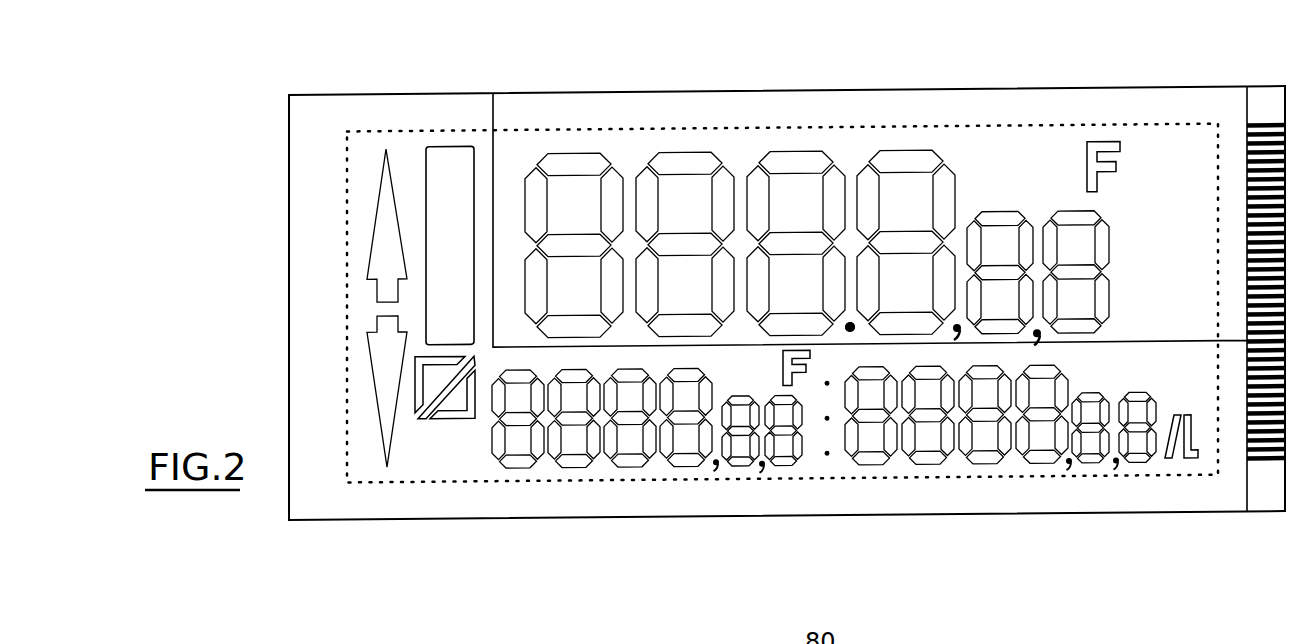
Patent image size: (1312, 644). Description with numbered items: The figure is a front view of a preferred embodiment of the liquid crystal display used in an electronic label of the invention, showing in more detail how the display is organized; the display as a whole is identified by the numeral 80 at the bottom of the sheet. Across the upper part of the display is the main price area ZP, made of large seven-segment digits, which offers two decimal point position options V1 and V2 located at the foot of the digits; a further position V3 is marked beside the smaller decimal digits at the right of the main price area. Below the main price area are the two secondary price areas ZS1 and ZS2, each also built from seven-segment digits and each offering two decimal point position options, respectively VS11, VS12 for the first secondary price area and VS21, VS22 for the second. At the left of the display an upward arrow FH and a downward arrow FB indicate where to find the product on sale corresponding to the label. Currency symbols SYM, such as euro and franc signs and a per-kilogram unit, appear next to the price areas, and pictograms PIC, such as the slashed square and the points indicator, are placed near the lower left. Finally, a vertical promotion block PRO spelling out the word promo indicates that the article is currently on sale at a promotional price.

The display screen 80 is at (787, 303).
The upward arrow FH is at (377, 213).
The downward arrow FB is at (373, 370).
The promotion block PRO is at (452, 136).
The main price area ZP is at (782, 148).
The decimal point position option V1 is at (850, 312).
The decimal point position option V2 is at (962, 312).
The decimal digits V3 is at (1040, 312).
The currency symbols SYM is at (1123, 338).
The pictograms PIC is at (477, 423).
The secondary price area ZS2 is at (620, 480).
The decimal point position option VS21 is at (725, 483).
The decimal point position option VS22 is at (777, 483).
The secondary price area ZS1 is at (993, 477).
The decimal point position option VS11 is at (1068, 465).
The decimal point position option VS12 is at (1120, 465).